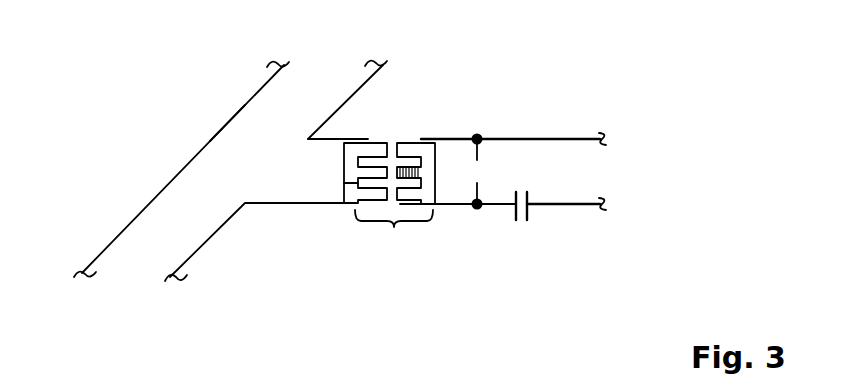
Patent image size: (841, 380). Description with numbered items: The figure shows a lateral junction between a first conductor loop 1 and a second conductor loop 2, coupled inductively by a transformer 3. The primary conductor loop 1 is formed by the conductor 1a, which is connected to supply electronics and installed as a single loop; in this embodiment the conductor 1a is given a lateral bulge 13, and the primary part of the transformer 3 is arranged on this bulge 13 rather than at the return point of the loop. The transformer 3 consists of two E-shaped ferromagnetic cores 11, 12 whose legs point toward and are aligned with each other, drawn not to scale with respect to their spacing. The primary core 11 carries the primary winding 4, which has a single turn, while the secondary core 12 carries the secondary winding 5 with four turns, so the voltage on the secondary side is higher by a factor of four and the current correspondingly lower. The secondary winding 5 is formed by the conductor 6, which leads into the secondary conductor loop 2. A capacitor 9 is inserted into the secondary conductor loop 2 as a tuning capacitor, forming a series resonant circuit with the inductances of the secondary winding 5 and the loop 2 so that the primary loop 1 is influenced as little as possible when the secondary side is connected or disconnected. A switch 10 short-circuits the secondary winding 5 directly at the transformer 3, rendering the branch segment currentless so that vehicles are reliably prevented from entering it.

The primary conductor loop 1 is at (138, 130).
The conductor 1a is at (227, 120).
The secondary conductor loop 2 is at (567, 234).
The transformer 3 is at (394, 240).
The primary winding 4 is at (360, 172).
The secondary winding 5 is at (410, 167).
The conductor 6 is at (493, 139).
The capacitor 9 is at (515, 215).
The switch 10 is at (477, 183).
The core 11 is at (351, 188).
The core 12 is at (433, 160).
The lateral bulge 13 is at (284, 236).